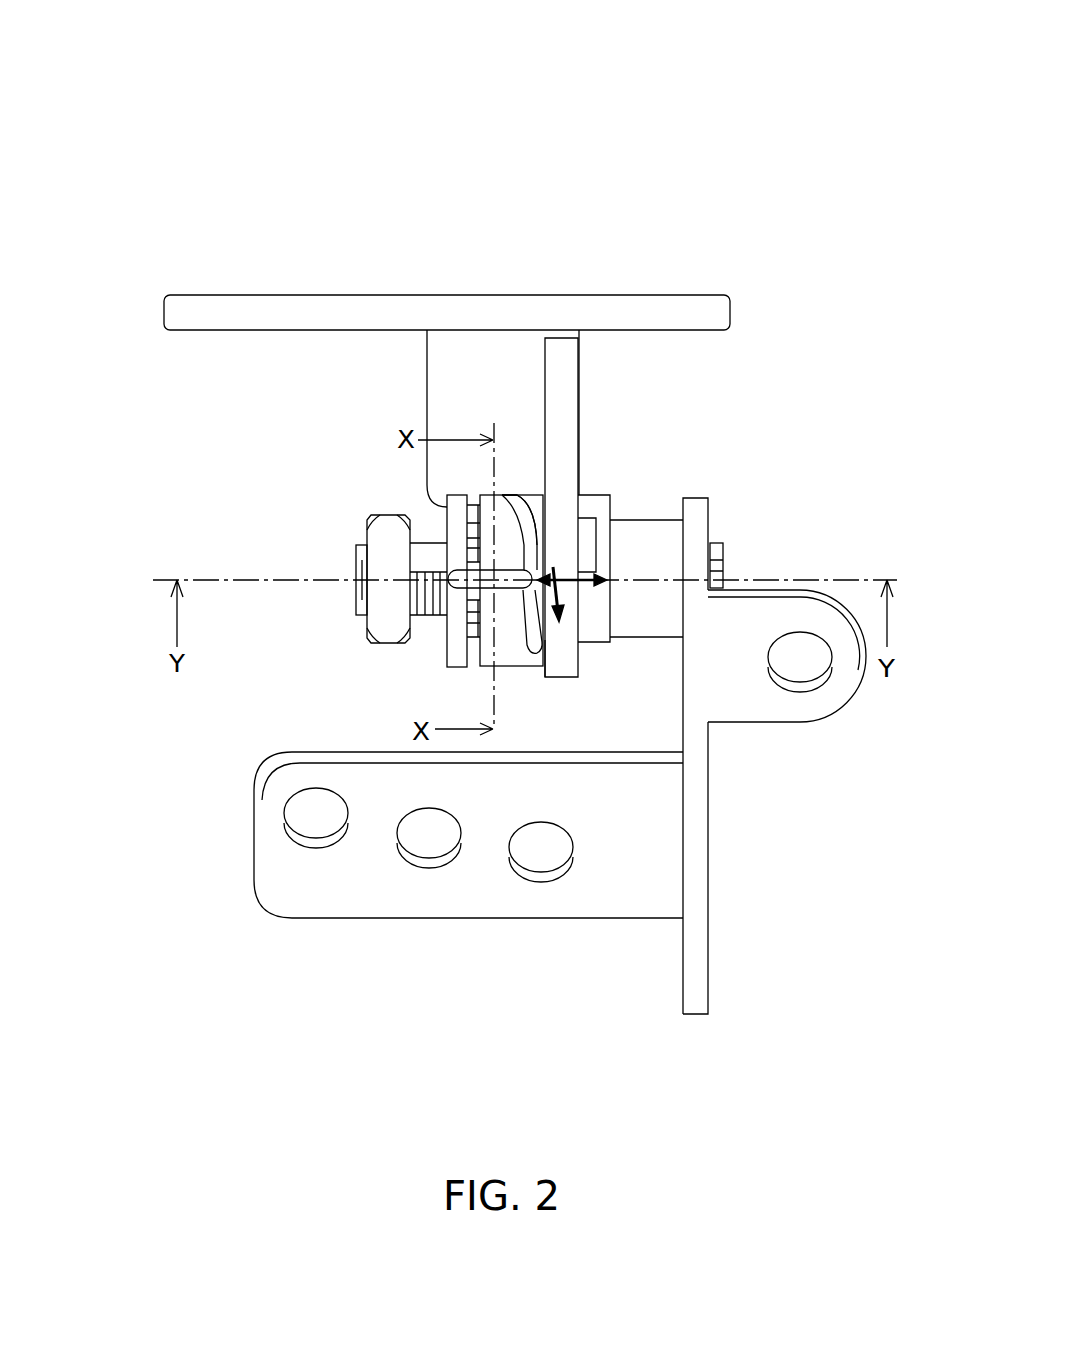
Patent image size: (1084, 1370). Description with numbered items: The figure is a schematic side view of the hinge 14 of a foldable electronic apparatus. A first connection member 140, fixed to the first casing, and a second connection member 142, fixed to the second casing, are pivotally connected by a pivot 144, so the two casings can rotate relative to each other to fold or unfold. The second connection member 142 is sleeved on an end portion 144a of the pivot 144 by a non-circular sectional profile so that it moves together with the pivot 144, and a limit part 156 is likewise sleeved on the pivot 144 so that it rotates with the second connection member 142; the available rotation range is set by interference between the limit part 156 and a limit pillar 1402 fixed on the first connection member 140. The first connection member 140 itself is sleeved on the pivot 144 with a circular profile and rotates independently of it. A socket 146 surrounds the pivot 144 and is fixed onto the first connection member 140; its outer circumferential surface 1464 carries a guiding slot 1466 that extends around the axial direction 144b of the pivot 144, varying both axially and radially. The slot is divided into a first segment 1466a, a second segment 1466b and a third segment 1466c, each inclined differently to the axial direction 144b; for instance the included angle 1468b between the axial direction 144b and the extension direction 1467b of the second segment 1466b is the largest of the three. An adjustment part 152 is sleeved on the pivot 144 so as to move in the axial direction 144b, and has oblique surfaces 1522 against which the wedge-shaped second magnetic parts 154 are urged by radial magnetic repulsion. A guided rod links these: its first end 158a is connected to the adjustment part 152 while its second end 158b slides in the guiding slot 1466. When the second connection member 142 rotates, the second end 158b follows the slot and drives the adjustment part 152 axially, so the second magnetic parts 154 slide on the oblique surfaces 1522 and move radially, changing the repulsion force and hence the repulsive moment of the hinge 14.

The hinge 14 is at (248, 113).
The first connection member 140 is at (208, 322).
The second connection member 142 is at (368, 908).
The pivot 144 is at (422, 553).
The end portion 144a is at (723, 545).
The axial direction 144b is at (608, 542).
The socket 146 is at (517, 458).
The limit pillar 1402 is at (588, 517).
The outer circumferential surface 1464 is at (507, 658).
The guiding slot 1466 is at (672, 333).
The first segment 1466a is at (517, 495).
The second segment 1466b is at (556, 540).
The third segment 1466c is at (527, 497).
The extension direction 1467b is at (570, 612).
The included angle 1468b is at (562, 598).
The adjustment part 152 is at (453, 667).
The oblique surface 1522 is at (470, 545).
The second magnetic part 154 is at (478, 537).
The limit part 156 is at (590, 633).
The first end 158a is at (461, 589).
The second end 158b is at (530, 657).